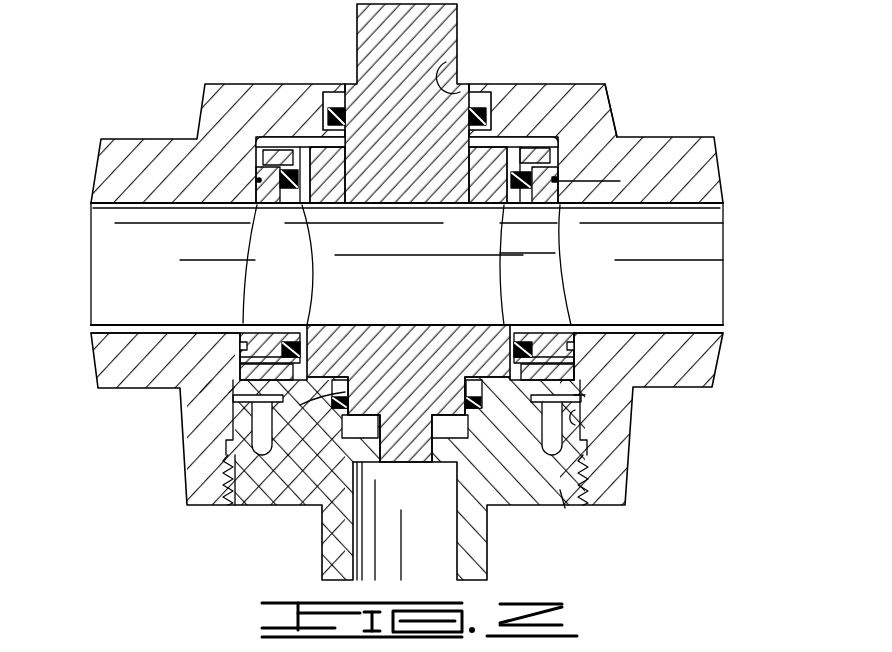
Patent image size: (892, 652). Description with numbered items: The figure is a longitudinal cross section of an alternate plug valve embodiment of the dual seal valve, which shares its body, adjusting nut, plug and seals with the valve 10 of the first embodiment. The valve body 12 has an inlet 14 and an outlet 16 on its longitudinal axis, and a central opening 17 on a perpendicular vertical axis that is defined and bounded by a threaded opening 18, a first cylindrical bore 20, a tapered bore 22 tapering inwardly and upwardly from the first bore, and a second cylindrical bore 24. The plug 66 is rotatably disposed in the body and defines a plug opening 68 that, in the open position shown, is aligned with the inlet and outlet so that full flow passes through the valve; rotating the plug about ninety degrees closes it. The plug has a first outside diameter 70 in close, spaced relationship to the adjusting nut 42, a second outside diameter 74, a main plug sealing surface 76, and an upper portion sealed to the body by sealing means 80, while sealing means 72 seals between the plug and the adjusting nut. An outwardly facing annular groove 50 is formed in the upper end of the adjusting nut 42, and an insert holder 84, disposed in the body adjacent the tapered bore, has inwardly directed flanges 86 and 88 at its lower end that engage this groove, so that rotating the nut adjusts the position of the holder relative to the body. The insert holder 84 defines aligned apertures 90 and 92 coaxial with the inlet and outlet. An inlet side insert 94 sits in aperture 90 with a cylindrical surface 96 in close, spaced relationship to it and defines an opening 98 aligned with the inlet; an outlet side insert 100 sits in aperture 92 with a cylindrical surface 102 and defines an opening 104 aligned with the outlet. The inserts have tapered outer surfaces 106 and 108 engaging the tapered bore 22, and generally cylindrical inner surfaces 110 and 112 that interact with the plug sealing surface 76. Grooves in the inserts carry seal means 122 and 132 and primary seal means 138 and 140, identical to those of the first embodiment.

The valve 10 is at (608, 70).
The valve body 12 is at (678, 150).
The inlet 14 is at (113, 325).
The outlet 16 is at (692, 325).
The central opening 17 is at (591, 281).
The threaded opening 18 is at (565, 508).
The first cylindrical bore 20 is at (578, 422).
The tapered bore 22 is at (585, 395).
The second cylindrical bore 24 is at (450, 68).
The adjusting nut 42 is at (513, 477).
The annular groove 50 is at (225, 458).
The plug 66 is at (324, 148).
The plug opening 68 is at (387, 325).
The first outside diameter 70 is at (305, 508).
The sealing means 72 is at (255, 508).
The second outside diameter 74 is at (232, 500).
The plug sealing surface 76 is at (258, 382).
The sealing means 80 is at (338, 108).
The insert holder 84 is at (595, 150).
The inwardly directed flange 86 is at (262, 402).
The inwardly directed flange 88 is at (600, 378).
The aperture 90 is at (256, 178).
The aperture 92 is at (590, 180).
The inlet side insert 94 is at (262, 210).
The cylindrical surface 96 is at (285, 150).
The opening 98 is at (268, 325).
The outlet side insert 100 is at (562, 210).
The cylindrical surface 102 is at (526, 165).
The opening 104 is at (535, 325).
The tapered outer surface 106 is at (238, 333).
The tapered outer surface 108 is at (630, 337).
The cylindrical inner surface 110 is at (317, 335).
The cylindrical inner surface 112 is at (482, 335).
The seal means 122 is at (590, 181).
The seal means 132 is at (292, 180).
The primary seal means 138 is at (322, 185).
The primary seal means 140 is at (492, 185).